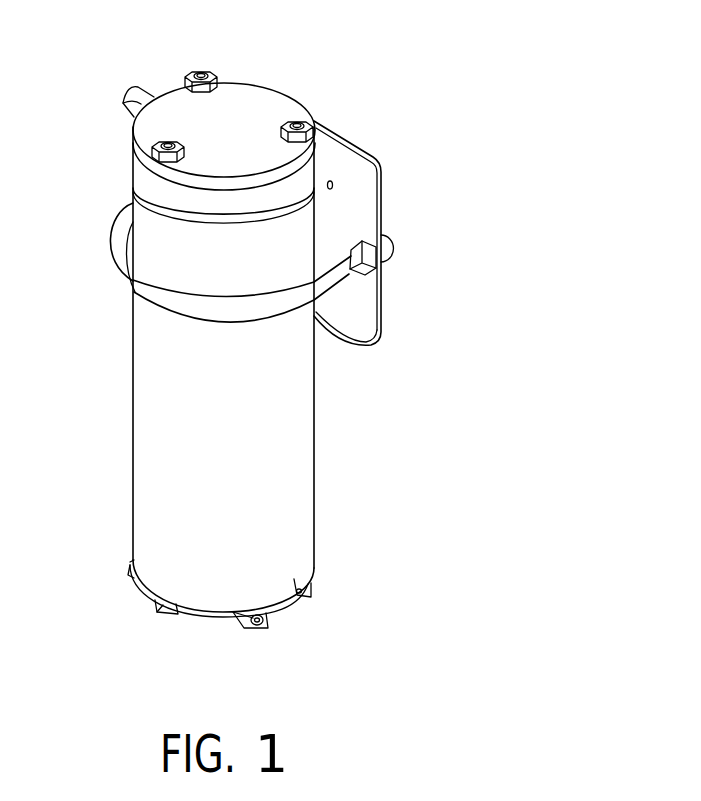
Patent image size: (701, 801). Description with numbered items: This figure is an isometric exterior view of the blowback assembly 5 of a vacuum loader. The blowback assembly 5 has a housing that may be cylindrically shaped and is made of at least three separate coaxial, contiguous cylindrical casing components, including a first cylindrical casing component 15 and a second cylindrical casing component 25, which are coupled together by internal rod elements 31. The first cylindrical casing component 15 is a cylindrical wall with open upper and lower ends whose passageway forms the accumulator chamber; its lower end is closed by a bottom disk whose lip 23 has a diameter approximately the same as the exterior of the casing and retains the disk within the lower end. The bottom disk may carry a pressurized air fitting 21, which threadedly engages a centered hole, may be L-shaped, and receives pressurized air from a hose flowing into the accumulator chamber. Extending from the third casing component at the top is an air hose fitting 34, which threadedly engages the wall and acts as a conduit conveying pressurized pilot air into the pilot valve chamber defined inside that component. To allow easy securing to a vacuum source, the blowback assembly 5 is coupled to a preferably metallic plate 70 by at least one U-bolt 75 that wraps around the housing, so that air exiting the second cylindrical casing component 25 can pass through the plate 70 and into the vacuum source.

The blowback assembly 5 is at (282, 77).
The first cylindrical casing component 15 is at (134, 478).
The pressurized air fitting 21 is at (256, 628).
The lip 23 is at (308, 582).
The second cylindrical casing component 25 is at (148, 230).
The internal rod elements 31 is at (170, 615).
The air hose fitting 34 is at (150, 97).
The plate 70 is at (379, 163).
The U-bolt 75 is at (383, 290).